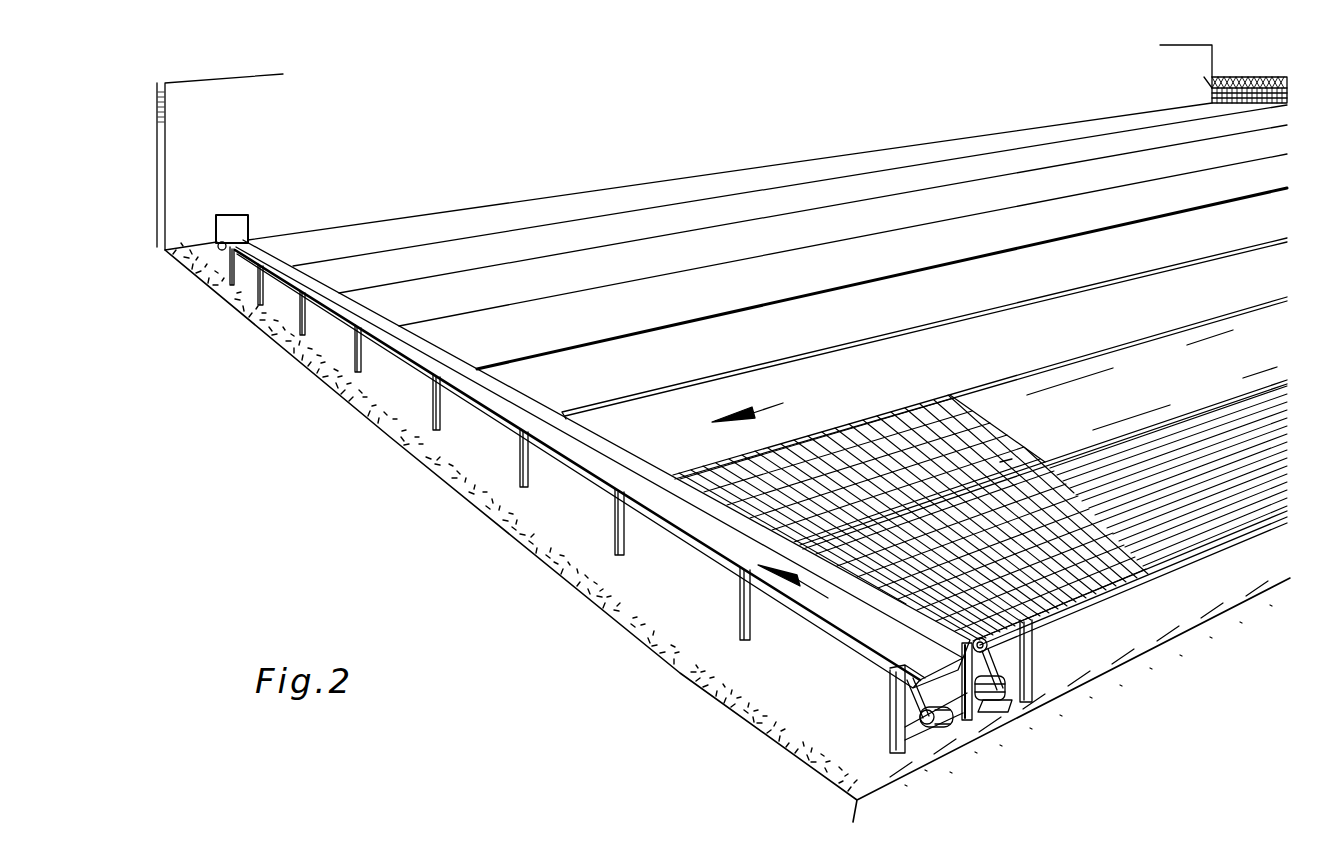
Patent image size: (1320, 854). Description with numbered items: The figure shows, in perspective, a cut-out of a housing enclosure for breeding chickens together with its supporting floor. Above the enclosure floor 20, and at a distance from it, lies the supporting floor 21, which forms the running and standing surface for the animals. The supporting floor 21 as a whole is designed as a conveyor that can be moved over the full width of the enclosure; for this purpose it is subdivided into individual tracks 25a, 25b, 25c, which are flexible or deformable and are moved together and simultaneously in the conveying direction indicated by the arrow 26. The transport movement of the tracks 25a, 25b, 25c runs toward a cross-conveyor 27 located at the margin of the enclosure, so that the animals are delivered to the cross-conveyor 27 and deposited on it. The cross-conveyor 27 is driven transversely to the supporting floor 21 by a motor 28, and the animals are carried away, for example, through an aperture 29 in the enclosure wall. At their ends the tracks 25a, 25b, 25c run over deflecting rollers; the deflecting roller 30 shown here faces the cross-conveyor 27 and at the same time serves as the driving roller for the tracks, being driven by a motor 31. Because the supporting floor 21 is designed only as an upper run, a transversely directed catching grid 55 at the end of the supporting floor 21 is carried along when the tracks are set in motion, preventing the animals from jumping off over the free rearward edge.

The enclosure floor 20 is at (557, 563).
The supporting floor 21 is at (612, 183).
The track 25a is at (1193, 498).
The track 25b is at (1205, 367).
The track 25c is at (1080, 333).
The arrow 26 is at (757, 408).
The cross-conveyor 27 is at (852, 617).
The motor 28 is at (943, 717).
The aperture 29 is at (232, 227).
The deflecting roller 30 is at (985, 648).
The motor 31 is at (1000, 710).
The catching grid 55 is at (1213, 91).